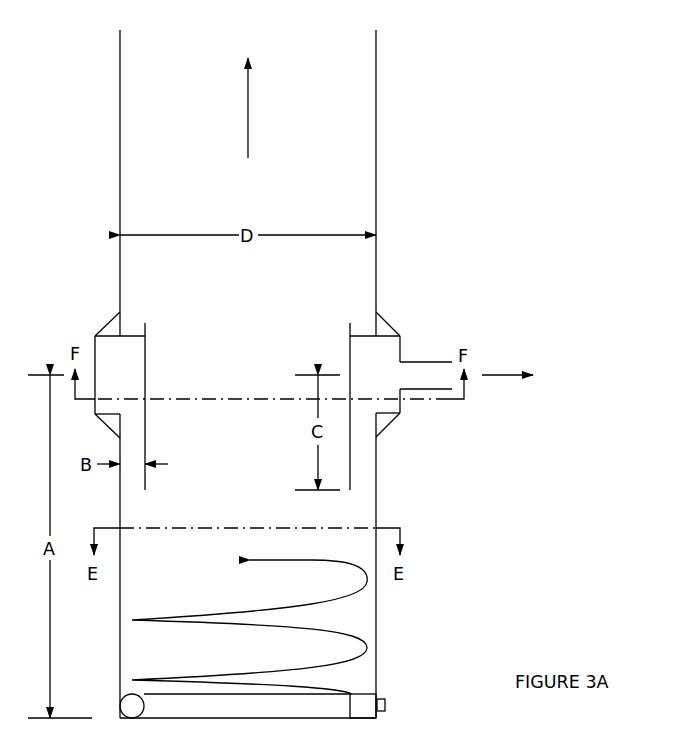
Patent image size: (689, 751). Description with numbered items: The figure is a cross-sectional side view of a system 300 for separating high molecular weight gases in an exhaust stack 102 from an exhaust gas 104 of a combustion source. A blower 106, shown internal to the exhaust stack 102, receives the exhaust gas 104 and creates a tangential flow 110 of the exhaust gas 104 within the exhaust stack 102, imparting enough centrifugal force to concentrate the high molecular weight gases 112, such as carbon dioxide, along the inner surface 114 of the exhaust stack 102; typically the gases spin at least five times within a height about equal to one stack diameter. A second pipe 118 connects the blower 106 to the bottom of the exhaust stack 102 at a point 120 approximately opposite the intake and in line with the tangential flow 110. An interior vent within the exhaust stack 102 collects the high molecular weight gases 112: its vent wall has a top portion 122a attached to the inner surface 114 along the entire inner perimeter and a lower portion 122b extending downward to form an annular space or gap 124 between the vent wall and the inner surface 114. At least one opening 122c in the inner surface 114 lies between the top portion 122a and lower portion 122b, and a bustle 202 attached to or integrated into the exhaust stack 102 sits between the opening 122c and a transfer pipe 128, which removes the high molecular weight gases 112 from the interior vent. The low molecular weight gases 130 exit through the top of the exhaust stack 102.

The system 300 is at (532, 81).
The exhaust stack 102 is at (376, 168).
The low molecular weight gases 130 is at (293, 109).
The high molecular weight gases 112 is at (559, 388).
The top portion of vent wall 122a is at (133, 335).
The lower portion of vent wall 122b is at (148, 369).
The opening 122c is at (387, 377).
The transfer pipe 128 is at (440, 361).
The bustle 202 is at (95, 358).
The annular space or gap 124 is at (133, 452).
The inner surface 114 is at (375, 515).
The tangential flow 110 is at (310, 565).
The point 120 is at (126, 696).
The second pipe 118 is at (250, 705).
The blower 106 is at (363, 706).
The exhaust gas 104 is at (387, 705).